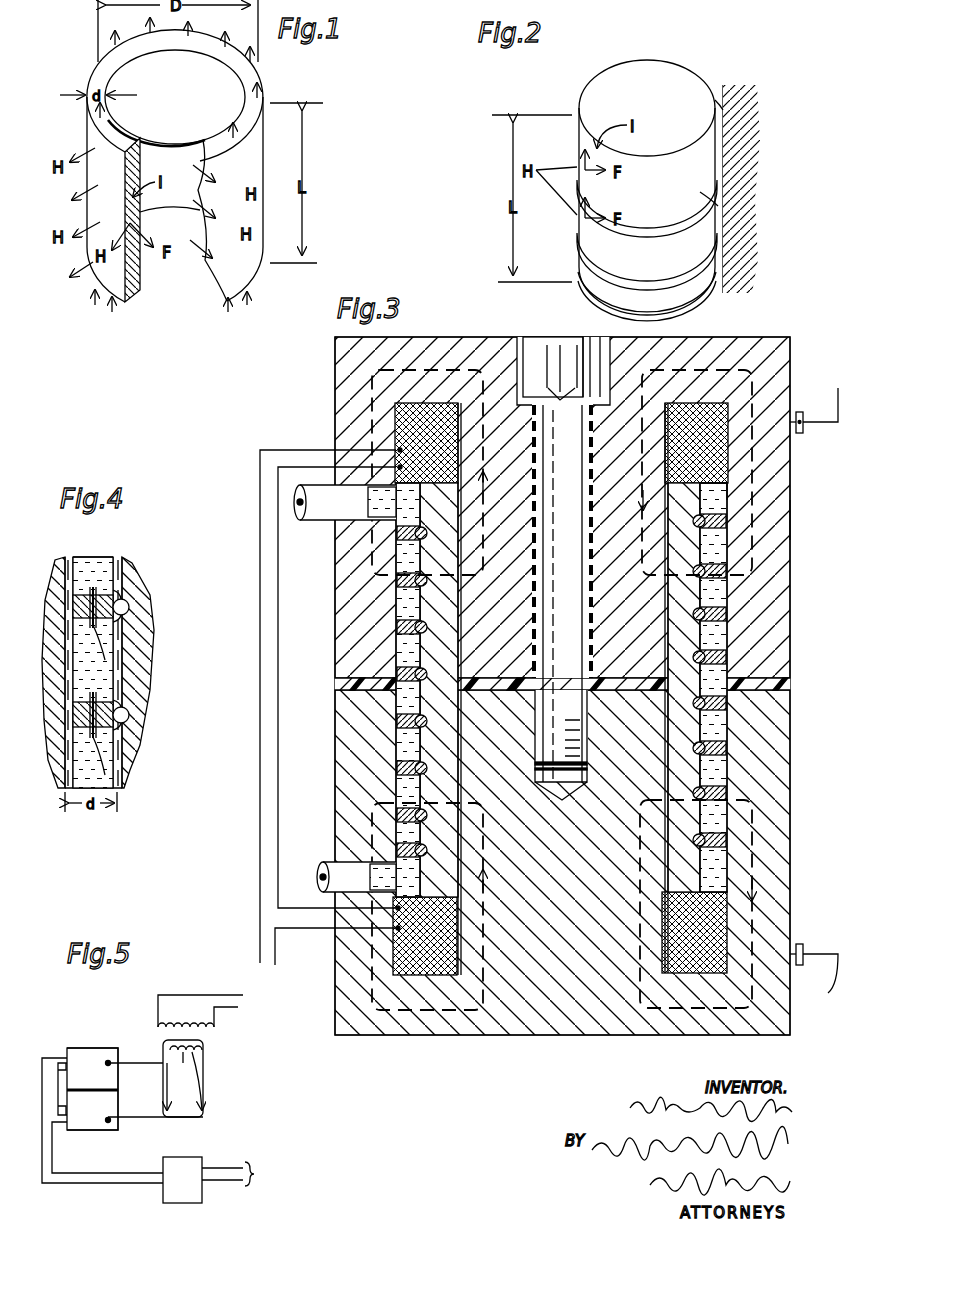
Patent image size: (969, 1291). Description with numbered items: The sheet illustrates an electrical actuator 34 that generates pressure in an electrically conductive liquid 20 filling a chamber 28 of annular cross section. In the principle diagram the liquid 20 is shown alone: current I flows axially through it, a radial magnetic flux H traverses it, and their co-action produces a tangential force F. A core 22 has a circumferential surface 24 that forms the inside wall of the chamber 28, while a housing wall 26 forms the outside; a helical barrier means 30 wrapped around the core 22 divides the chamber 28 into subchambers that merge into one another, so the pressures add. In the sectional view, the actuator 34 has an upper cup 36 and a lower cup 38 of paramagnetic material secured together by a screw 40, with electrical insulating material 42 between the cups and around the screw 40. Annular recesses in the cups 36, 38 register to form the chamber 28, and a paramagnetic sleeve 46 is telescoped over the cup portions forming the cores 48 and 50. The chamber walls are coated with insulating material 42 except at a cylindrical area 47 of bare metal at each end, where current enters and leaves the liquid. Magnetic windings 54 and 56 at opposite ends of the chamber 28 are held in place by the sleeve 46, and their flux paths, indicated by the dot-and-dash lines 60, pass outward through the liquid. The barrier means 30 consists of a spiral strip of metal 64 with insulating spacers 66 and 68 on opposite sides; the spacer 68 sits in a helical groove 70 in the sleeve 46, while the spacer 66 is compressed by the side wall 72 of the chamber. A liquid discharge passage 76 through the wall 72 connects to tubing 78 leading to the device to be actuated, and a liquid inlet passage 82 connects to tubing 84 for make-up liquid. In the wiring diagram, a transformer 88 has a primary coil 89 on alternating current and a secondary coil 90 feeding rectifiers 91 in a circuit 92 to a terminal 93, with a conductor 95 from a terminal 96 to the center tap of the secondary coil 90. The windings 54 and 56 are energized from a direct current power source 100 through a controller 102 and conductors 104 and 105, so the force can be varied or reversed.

In FIG. 1, the liquid 20 is at (278, 223).
In FIG. 3, the liquid 20 is at (403, 640).
In FIG. 4, the liquid 20 is at (95, 568).
In FIG. 2, the core 22 is at (718, 70).
In FIG. 2, the circumferential surface 24 is at (700, 192).
In FIG. 3, the circumferential surface 24 is at (667, 635).
In FIG. 2, the housing wall 26 is at (737, 117).
In FIG. 3, the housing wall 26 is at (723, 722).
In FIG. 2, the chamber 28 is at (718, 92).
In FIG. 3, the chamber 28 is at (728, 873).
In FIG. 4, the chamber 28 is at (112, 548).
In FIG. 2, the helical barrier means 30 is at (677, 177).
In FIG. 3, the helical barrier means 30 is at (390, 730).
In FIG. 4, the helical barrier means 30 is at (138, 613).
In FIG. 3, the actuator 34 is at (587, 662).
In FIG. 5, the actuator 34 is at (97, 1041).
In FIG. 3, the upper cup 36 is at (797, 522).
In FIG. 3, the lower cup 38 is at (795, 740).
In FIG. 3, the screw 40 is at (532, 352).
In FIG. 3, the electrical insulating material 42 is at (524, 340).
In FIG. 3, the sleeve 46 is at (687, 880).
In FIG. 4, the sleeve 46 is at (112, 786).
In FIG. 3, the cylindrical area of bare metal 47 is at (720, 493).
In FIG. 3, the core 48 is at (515, 590).
In FIG. 3, the core 50 is at (606, 700).
In FIG. 3, the magnetic winding 54 is at (685, 403).
In FIG. 3, the magnetic winding 56 is at (730, 923).
In FIG. 3, the dot-and-dash lines 60 is at (753, 452).
In FIG. 4, the spiral strip of metal 64 is at (97, 627).
In FIG. 4, the insulating spacer 66 is at (116, 586).
In FIG. 4, the insulating spacer 68 is at (128, 600).
In FIG. 4, the helical groove 70 is at (97, 698).
In FIG. 3, the side wall 72 is at (342, 428).
In FIG. 4, the side wall 72 is at (63, 557).
In FIG. 3, the liquid discharge passage 76 is at (366, 500).
In FIG. 3, the tubing 78 is at (322, 520).
In FIG. 5, the tubing 78 is at (72, 1078).
In FIG. 3, the liquid inlet passage 82 is at (360, 866).
In FIG. 3, the tubing 84 is at (332, 890).
In FIG. 5, the tubing 84 is at (68, 1105).
In FIG. 5, the transformer 88 is at (214, 1041).
In FIG. 5, the primary coil 89 is at (175, 1022).
In FIG. 5, the secondary coil 90 is at (184, 1078).
In FIG. 5, the rectifiers 91 is at (165, 1113).
In FIG. 3, the circuit 92 is at (820, 983).
In FIG. 5, the circuit 92 is at (150, 1118).
In FIG. 3, the terminal 93 is at (804, 952).
In FIG. 5, the terminal 93 is at (108, 1124).
In FIG. 3, the conductor 95 is at (838, 398).
In FIG. 5, the conductor 95 is at (155, 1063).
In FIG. 3, the terminal 96 is at (806, 430).
In FIG. 5, the terminal 96 is at (108, 1058).
In FIG. 5, the direct current power source 100 is at (257, 1161).
In FIG. 5, the controller 102 is at (218, 1186).
In FIG. 5, the conductor 104 is at (120, 1185).
In FIG. 5, the conductor 105 is at (145, 1169).